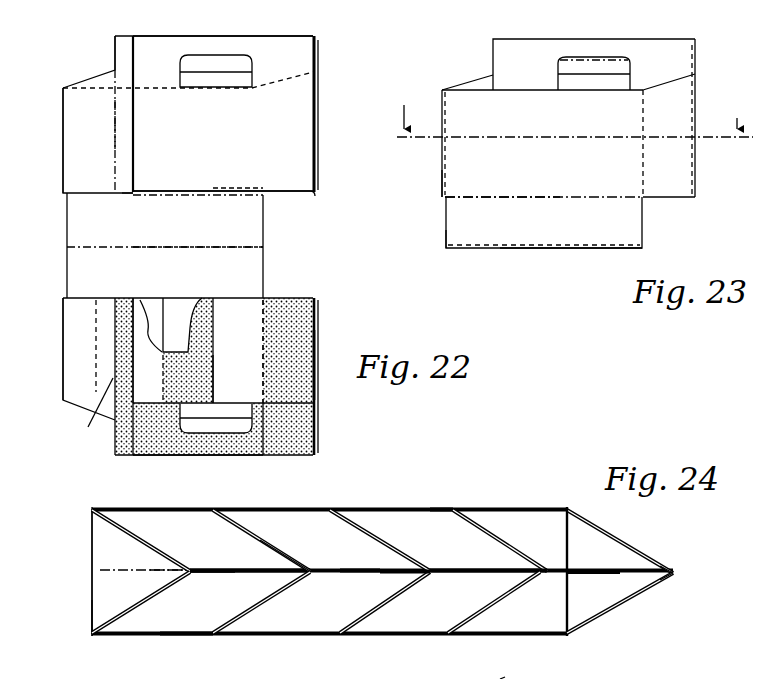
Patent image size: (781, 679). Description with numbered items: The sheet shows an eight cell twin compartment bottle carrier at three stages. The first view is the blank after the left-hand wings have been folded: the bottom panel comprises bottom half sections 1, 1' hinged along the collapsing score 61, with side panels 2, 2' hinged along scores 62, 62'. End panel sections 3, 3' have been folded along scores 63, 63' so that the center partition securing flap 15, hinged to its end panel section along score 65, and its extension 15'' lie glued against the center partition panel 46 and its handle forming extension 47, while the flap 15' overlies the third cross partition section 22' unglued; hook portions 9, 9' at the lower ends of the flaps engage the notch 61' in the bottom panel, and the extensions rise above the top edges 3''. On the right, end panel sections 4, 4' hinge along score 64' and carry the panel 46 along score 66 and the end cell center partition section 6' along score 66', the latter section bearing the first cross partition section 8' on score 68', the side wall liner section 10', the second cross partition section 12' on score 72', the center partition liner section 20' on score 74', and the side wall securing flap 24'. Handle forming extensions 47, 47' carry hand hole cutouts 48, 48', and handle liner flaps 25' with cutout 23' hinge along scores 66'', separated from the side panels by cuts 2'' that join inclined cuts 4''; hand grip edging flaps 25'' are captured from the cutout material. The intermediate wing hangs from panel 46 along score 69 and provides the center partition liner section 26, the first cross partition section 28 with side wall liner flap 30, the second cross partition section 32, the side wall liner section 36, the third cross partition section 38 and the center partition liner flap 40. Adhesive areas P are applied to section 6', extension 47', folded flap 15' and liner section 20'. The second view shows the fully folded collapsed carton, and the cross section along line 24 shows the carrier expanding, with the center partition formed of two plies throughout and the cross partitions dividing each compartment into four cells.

In FIG. 22, the bottom half section 1 is at (59, 220).
In FIG. 24, the bottom half section 1 is at (72, 539).
In FIG. 22, the bottom half section 1' is at (55, 272).
In FIG. 23, the bottom half section 1' is at (544, 222).
In FIG. 24, the bottom half section 1' is at (71, 602).
In FIG. 22, the side panel 2 is at (198, 205).
In FIG. 24, the side panel 2 is at (329, 493).
In FIG. 23, the side panel 2' is at (544, 171).
In FIG. 24, the side panel 2' is at (329, 651).
In FIG. 23, the transverse cut 2'' is at (542, 101).
In FIG. 22, the end panel section 3 is at (98, 114).
In FIG. 24, the end panel section 3 is at (141, 540).
In FIG. 23, the end panel section 3' is at (467, 60).
In FIG. 24, the end panel section 3' is at (141, 602).
In FIG. 22, the top edge of end panel section 3'' is at (188, 70).
In FIG. 23, the top edge of end panel section 3'' is at (456, 126).
In FIG. 22, the end panel section 4 is at (289, 244).
In FIG. 24, the end panel section 4 is at (566, 593).
In FIG. 23, the end panel section 4' is at (669, 171).
In FIG. 24, the end panel section 4' is at (620, 606).
In FIG. 23, the transversely inclined cut 4'' is at (669, 92).
In FIG. 22, the end cell center partition section 6' is at (208, 376).
In FIG. 24, the end cell center partition section 6' is at (593, 588).
In FIG. 22, the cross partition section 8' is at (238, 350).
In FIG. 24, the cross partition section 8' is at (494, 602).
In FIG. 22, the hook portion 9 is at (130, 206).
In FIG. 22, the hook portion 9' is at (116, 363).
In FIG. 24, the side wall liner section 10' is at (386, 602).
In FIG. 22, the cross partition section 12' is at (182, 299).
In FIG. 24, the cross partition section 12' is at (419, 586).
In FIG. 22, the center partition securing flap 15 is at (138, 112).
In FIG. 24, the center partition securing flap 15 is at (208, 551).
In FIG. 22, the center partition securing flap 15' is at (142, 327).
In FIG. 24, the center partition securing flap 15' is at (212, 587).
In FIG. 22, the securing flap extension 15'' is at (114, 251).
In FIG. 22, the center partition liner section 20' is at (216, 409).
In FIG. 24, the center partition liner section 20' is at (359, 589).
In FIG. 22, the cross partition section 22' is at (156, 310).
In FIG. 24, the cross partition section 22' is at (261, 602).
In FIG. 23, the hand hole cutout 23' is at (605, 49).
In FIG. 23, the section line 24 is at (573, 130).
In FIG. 22, the side wall securing flap 24' is at (68, 362).
In FIG. 24, the side wall securing flap 24' is at (186, 653).
In FIG. 23, the handle liner flap 25' is at (594, 50).
In FIG. 22, the hand grip edging flap 25'' is at (216, 247).
In FIG. 23, the hand grip edging flap 25'' is at (594, 53).
In FIG. 24, the center partition liner section 26 is at (483, 568).
In FIG. 24, the cross partition section 28 is at (505, 548).
In FIG. 24, the side wall liner flap 30 is at (440, 512).
In FIG. 24, the cross partition section 32 is at (395, 540).
In FIG. 24, the side wall liner section 36 is at (283, 518).
In FIG. 24, the cross partition section 38 is at (280, 552).
In FIG. 24, the center partition liner flap 40 is at (322, 565).
In FIG. 22, the center partition panel 46 is at (234, 128).
In FIG. 24, the center partition panel 46 is at (248, 562).
In FIG. 22, the handle forming extension 47 is at (223, 32).
In FIG. 22, the handle forming extension 47' is at (198, 467).
In FIG. 22, the hand hole cutout 48 is at (221, 47).
In FIG. 22, the hand hole cutout 48' is at (274, 441).
In FIG. 22, the collapsing score 61 is at (198, 236).
In FIG. 23, the collapsing score 61 is at (571, 261).
In FIG. 24, the collapsing score 61 is at (156, 563).
In FIG. 22, the notch 61' is at (143, 245).
In FIG. 23, the notch 61' is at (462, 252).
In FIG. 24, the notch 61' is at (113, 572).
In FIG. 22, the score 62 is at (198, 207).
In FIG. 23, the score 62' is at (502, 187).
In FIG. 22, the score 63 is at (42, 140).
In FIG. 24, the score 63 is at (67, 563).
In FIG. 22, the score 63' is at (42, 349).
In FIG. 23, the score 63' is at (421, 183).
In FIG. 24, the score 63' is at (66, 628).
In FIG. 23, the score line 64' is at (624, 143).
In FIG. 22, the score 65 is at (115, 137).
In FIG. 22, the transverse score 66 is at (327, 146).
In FIG. 24, the transverse score 66 is at (689, 560).
In FIG. 22, the transverse score 66' is at (339, 369).
In FIG. 23, the transverse score 66' is at (721, 137).
In FIG. 24, the transverse score 66' is at (693, 588).
In FIG. 22, the transverse score 66'' is at (344, 239).
In FIG. 23, the transverse score 66'' is at (720, 117).
In FIG. 24, the transverse score 66'' is at (533, 672).
In FIG. 22, the transverse score 68' is at (245, 351).
In FIG. 22, the transverse score 69 is at (240, 190).
In FIG. 22, the transverse score 72' is at (151, 377).
In FIG. 22, the transverse score 74' is at (233, 379).
In FIG. 22, the area of adhesive P is at (205, 300).